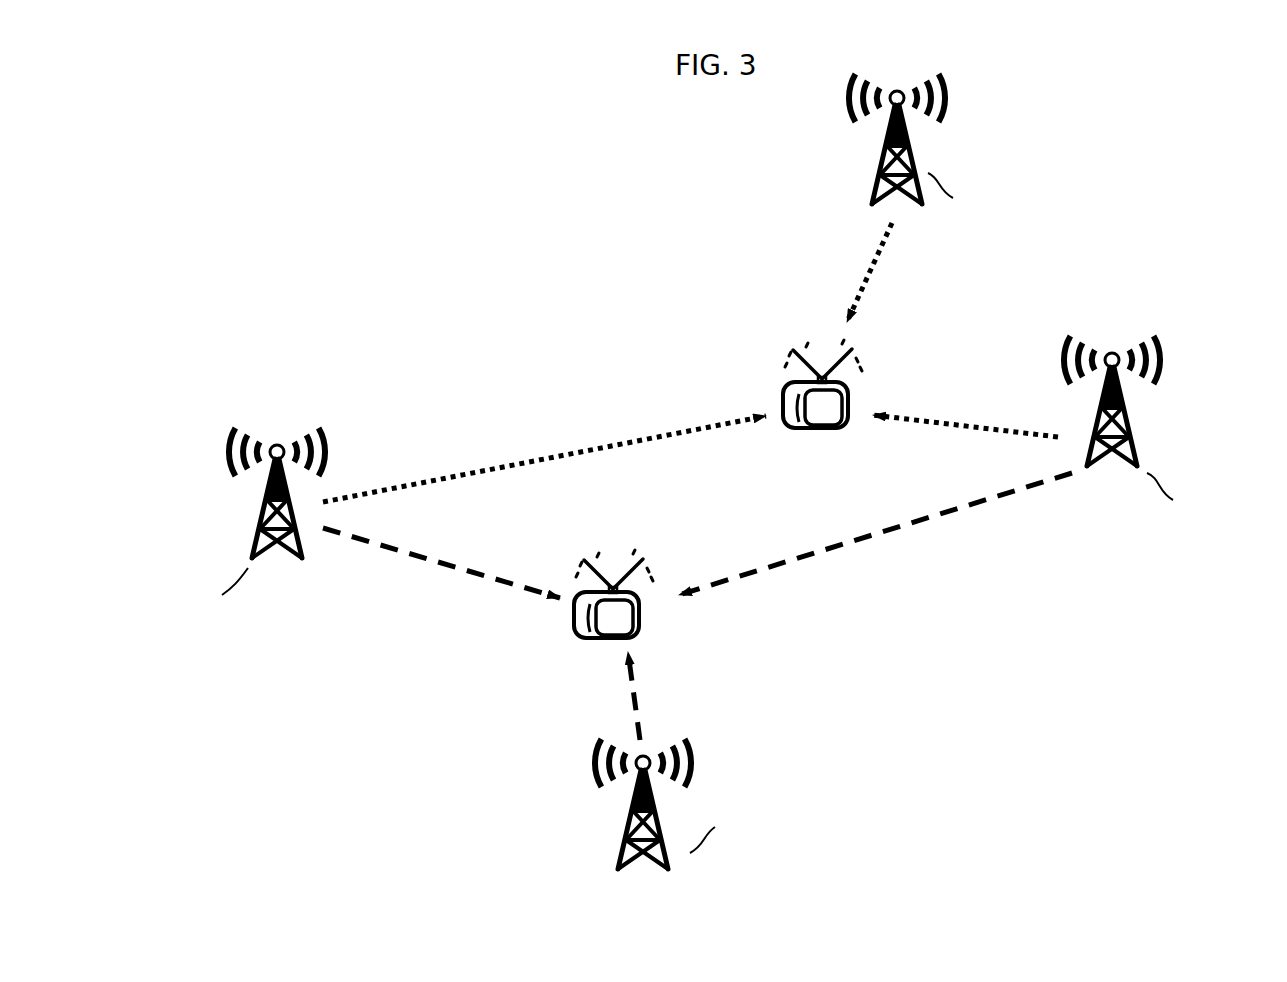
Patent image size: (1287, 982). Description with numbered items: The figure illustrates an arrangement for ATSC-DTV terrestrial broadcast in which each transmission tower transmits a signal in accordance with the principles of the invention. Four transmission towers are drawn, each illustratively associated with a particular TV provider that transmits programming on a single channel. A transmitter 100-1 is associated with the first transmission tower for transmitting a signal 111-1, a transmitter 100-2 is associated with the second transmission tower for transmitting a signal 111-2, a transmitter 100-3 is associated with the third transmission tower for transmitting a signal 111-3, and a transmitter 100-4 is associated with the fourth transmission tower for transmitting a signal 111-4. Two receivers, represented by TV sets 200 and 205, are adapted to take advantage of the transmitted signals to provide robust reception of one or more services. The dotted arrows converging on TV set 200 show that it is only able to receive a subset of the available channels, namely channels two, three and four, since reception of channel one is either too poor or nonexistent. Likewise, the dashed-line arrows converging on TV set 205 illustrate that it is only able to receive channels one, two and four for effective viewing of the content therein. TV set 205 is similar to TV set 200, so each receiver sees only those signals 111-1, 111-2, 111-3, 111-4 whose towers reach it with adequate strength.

The transmitter 100-1 is at (578, 778).
The transmitter 100-2 is at (220, 413).
The transmitter 100-3 is at (965, 97).
The transmitter 100-4 is at (1182, 360).
The signal 111-1 is at (650, 712).
The signal 111-2 is at (428, 492).
The signal 111-3 is at (870, 252).
The signal 111-4 is at (972, 452).
The TV set 200 is at (770, 352).
The TV set 205 is at (562, 637).